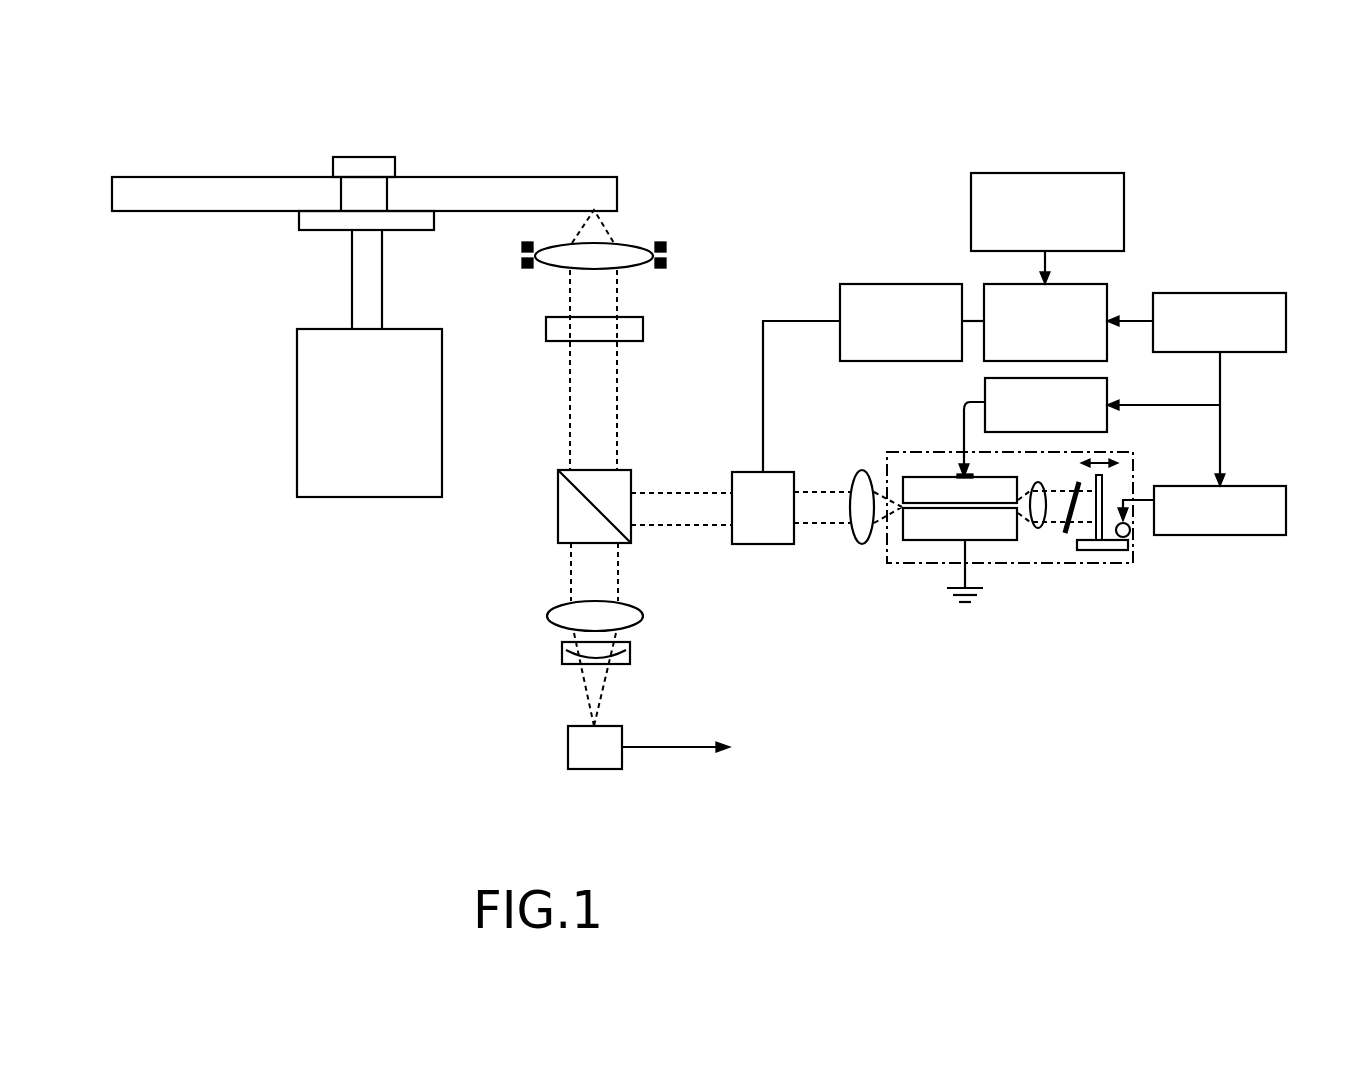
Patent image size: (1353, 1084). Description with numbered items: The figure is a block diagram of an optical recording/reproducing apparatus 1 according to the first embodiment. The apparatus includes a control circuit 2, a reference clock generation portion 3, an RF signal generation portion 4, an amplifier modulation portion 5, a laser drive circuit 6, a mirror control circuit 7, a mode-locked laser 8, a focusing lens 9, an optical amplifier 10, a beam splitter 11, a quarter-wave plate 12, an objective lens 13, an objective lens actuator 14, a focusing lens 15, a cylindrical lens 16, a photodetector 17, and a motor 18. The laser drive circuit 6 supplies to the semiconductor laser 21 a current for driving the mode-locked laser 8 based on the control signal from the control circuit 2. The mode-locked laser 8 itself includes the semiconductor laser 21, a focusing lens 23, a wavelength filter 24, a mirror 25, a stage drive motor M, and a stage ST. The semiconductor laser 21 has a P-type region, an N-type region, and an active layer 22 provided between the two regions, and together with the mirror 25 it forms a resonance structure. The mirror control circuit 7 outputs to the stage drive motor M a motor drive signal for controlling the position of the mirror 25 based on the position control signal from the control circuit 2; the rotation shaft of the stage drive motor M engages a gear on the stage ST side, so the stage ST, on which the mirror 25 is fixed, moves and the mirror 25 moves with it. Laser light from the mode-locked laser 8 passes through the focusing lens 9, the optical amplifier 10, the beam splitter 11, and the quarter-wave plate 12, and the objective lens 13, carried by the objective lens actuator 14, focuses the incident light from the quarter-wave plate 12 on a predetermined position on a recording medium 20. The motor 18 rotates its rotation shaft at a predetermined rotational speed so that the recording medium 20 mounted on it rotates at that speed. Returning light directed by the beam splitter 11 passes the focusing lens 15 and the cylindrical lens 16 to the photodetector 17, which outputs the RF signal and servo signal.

The optical recording/reproducing apparatus 1 is at (740, 156).
The control circuit 2 is at (1215, 293).
The reference clock generation portion 3 is at (1042, 173).
The RF signal generation portion 4 is at (1105, 284).
The amplifier modulation portion 5 is at (898, 284).
The laser drive circuit 6 is at (985, 394).
The mirror control circuit 7 is at (1247, 535).
The mode-locked laser 8 is at (907, 452).
The focusing lens 9 is at (852, 478).
The optical amplifier 10 is at (770, 544).
The beam splitter 11 is at (558, 506).
The quarter-wave plate 12 is at (643, 330).
The objective lens 13 is at (633, 243).
The objective lens actuator 14 is at (668, 262).
The focusing lens 15 is at (547, 616).
The cylindrical lens 16 is at (562, 652).
The photodetector 17 is at (568, 748).
The motor 18 is at (297, 418).
The recording medium 20 is at (196, 212).
The semiconductor laser 21 is at (912, 542).
The active layer 22 is at (920, 540).
The focusing lens 23 is at (1040, 530).
The wavelength filter 24 is at (1068, 537).
The mirror 25 is at (1105, 487).
The stage drive motor M is at (1135, 540).
The stage ST is at (1105, 552).